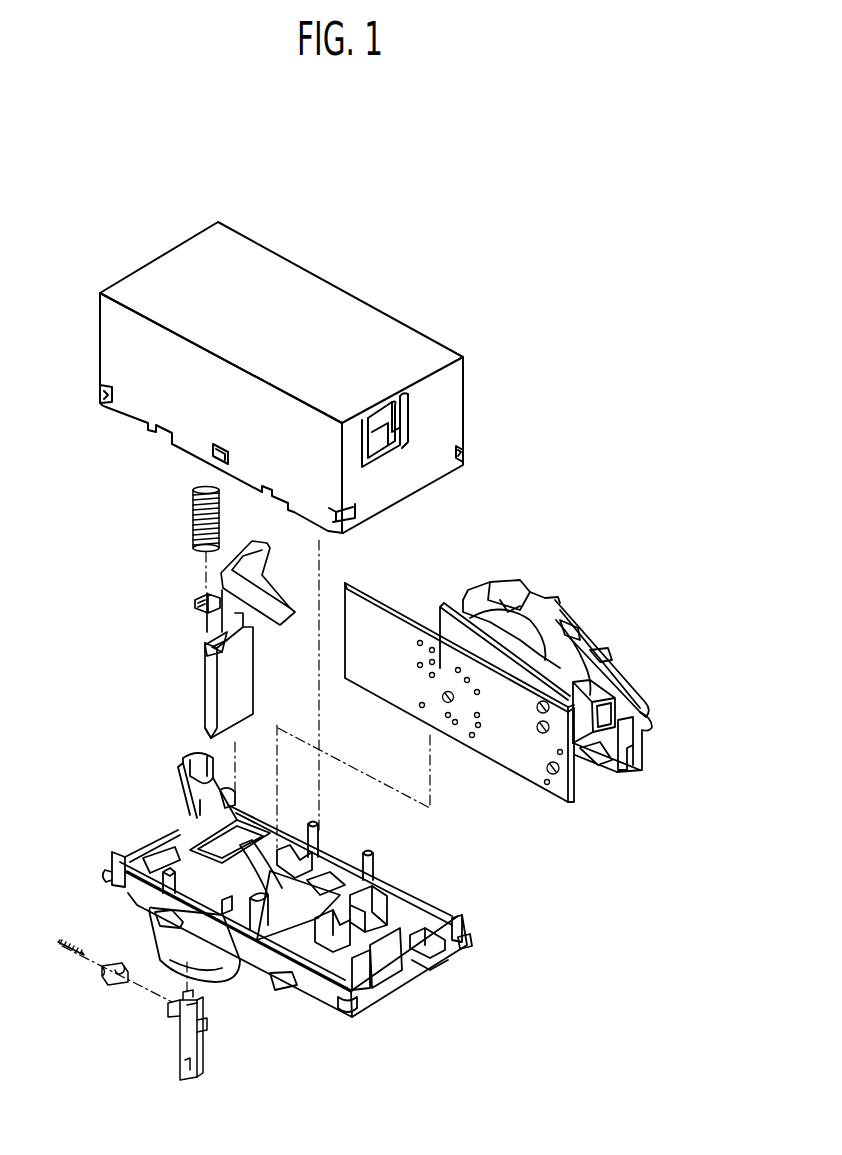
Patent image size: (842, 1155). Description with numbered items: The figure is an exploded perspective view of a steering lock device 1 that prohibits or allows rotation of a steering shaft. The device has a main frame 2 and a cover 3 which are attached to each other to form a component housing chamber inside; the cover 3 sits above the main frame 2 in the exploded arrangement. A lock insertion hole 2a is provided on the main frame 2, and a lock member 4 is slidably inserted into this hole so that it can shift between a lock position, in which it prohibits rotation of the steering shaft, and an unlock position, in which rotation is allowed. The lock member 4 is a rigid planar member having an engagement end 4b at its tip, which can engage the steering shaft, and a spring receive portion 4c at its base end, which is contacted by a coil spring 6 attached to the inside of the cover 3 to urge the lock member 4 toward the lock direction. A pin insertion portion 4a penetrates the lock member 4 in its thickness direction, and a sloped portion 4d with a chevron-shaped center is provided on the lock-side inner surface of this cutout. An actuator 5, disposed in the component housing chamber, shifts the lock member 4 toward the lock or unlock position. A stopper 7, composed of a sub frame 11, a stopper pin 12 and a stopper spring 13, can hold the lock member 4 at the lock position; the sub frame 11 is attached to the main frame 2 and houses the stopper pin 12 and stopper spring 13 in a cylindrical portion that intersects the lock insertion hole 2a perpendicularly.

The steering lock device 1 is at (386, 258).
The main frame 2 is at (286, 909).
The lock insertion hole 2a is at (205, 822).
The cover 3 is at (250, 258).
The lock member 4 is at (212, 647).
The pin insertion portion 4a is at (206, 642).
The engagement end 4b is at (207, 727).
The spring receive portion 4c is at (212, 582).
The sloped portion 4d is at (226, 648).
The actuator 5 is at (621, 670).
The coil spring 6 is at (193, 507).
The stopper 7 is at (86, 1006).
The sub frame 11 is at (182, 1053).
The stopper pin 12 is at (108, 982).
The stopper spring 13 is at (60, 943).